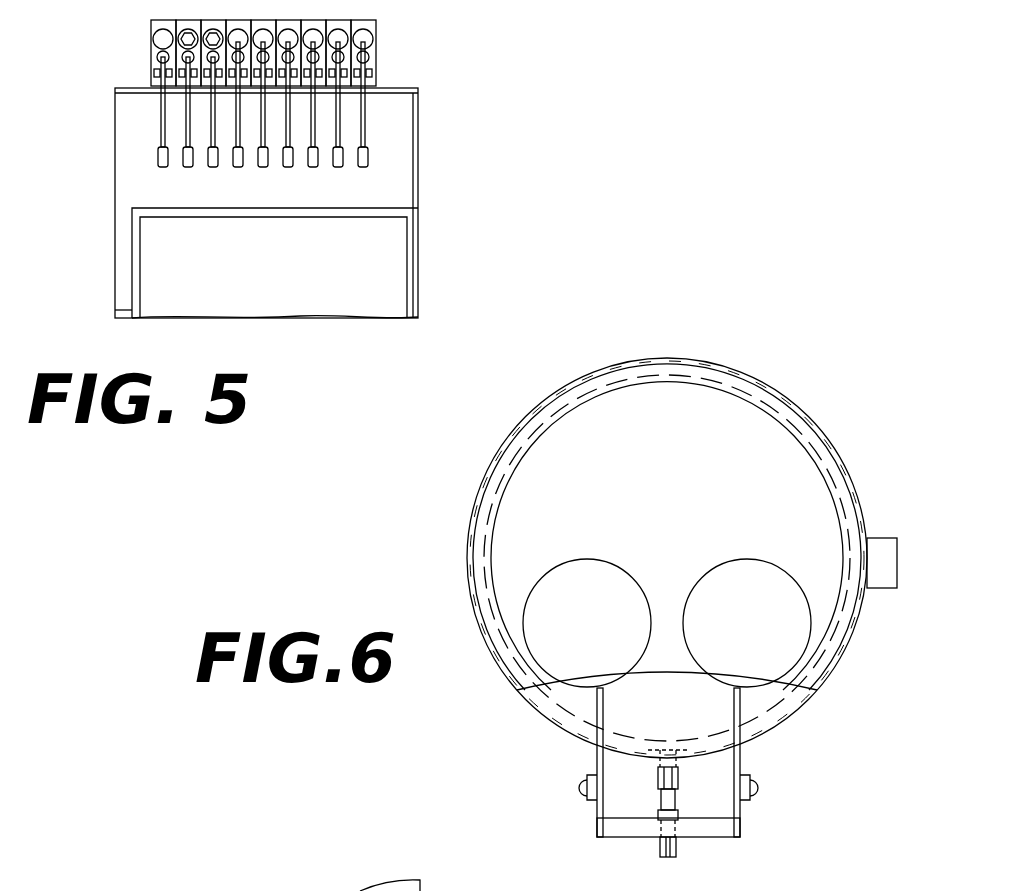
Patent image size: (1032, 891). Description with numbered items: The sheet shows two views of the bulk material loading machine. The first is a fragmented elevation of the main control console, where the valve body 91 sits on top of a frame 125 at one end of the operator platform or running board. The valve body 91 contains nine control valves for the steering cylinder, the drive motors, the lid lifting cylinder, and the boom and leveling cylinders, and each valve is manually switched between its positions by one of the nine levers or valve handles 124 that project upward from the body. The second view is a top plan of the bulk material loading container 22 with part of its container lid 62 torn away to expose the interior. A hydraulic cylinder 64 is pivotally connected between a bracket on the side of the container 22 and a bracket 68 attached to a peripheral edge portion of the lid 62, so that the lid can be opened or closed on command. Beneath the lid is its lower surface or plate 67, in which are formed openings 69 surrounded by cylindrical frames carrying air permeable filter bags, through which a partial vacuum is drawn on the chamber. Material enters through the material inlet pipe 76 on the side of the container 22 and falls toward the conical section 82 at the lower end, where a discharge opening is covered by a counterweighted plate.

In FIG. 5, the valve body 91 is at (380, 70).
In FIG. 5, the valve handles 124 is at (338, 168).
In FIG. 5, the frame 125 is at (161, 301).
In FIG. 6, the bulk material loading container 22 is at (790, 394).
In FIG. 6, the plate 67 is at (515, 526).
In FIG. 6, the material inlet pipe 76 is at (882, 538).
In FIG. 6, the openings 69 is at (710, 566).
In FIG. 6, the container lid 62 is at (677, 691).
In FIG. 6, the hydraulic cylinder 64 is at (656, 800).
In FIG. 6, the bracket 68 is at (706, 826).
In FIG. 6, the conical section 82 is at (250, 889).